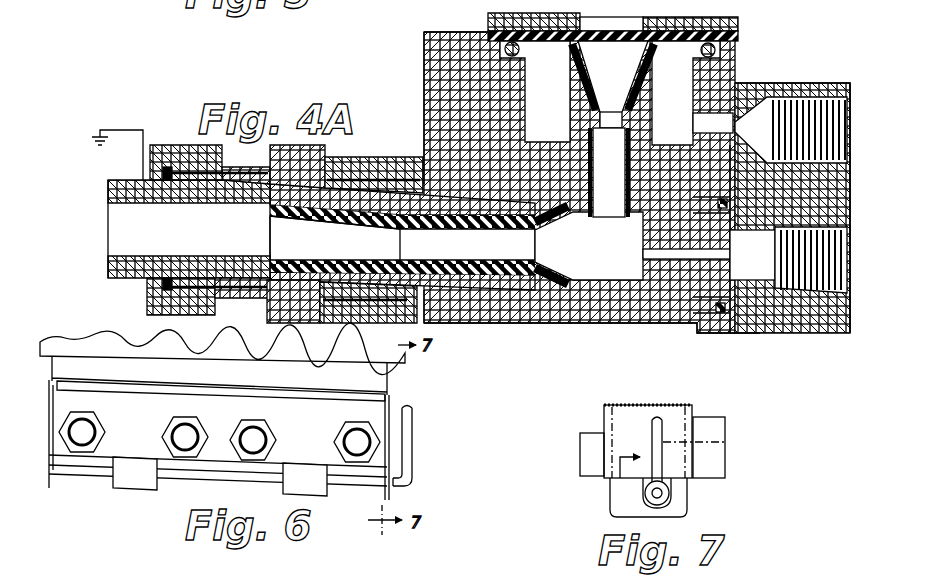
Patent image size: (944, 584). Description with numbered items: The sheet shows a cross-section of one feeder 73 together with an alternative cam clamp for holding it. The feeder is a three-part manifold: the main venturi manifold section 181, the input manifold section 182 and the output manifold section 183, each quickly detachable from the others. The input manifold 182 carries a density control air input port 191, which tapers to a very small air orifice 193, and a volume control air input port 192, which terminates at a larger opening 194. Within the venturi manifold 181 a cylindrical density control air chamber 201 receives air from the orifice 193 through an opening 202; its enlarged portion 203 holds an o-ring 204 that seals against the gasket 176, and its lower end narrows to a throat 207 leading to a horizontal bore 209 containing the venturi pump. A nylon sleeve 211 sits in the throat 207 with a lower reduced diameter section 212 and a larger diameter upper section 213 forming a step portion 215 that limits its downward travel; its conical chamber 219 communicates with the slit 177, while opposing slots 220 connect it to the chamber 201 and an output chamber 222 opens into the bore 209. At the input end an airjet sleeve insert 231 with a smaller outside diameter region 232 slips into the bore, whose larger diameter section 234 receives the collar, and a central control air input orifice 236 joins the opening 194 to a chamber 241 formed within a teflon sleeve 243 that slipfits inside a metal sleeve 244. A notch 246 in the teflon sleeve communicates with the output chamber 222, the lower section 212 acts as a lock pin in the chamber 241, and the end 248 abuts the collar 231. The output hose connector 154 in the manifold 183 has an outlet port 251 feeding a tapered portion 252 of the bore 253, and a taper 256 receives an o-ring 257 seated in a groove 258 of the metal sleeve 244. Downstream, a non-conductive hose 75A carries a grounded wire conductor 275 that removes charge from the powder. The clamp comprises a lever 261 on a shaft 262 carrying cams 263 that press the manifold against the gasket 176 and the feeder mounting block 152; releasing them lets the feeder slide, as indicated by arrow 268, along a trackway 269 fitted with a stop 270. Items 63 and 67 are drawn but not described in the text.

In FIG. 4A, the o-ring 204 is at (539, 14).
In FIG. 4A, the slit 177 is at (618, 40).
In FIG. 4A, the enlarged portion 203 is at (492, 31).
In FIG. 4A, the feeder mounting block 152 is at (740, 22).
In FIG. 6, the feeder mounting block 152 is at (219, 375).
In FIG. 4A, the gasket 176 is at (740, 42).
In FIG. 4A, the air orifice 193 is at (796, 98).
In FIG. 4A, the density control air input port 191 is at (852, 100).
In FIG. 4A, the larger diameter upper section 213 is at (535, 91).
In FIG. 4A, the opposing slots 220 is at (586, 46).
In FIG. 4A, the conical chamber 219 is at (613, 87).
In FIG. 4A, the nylon sleeve 211 is at (686, 93).
In FIG. 4A, the o-ring 257 is at (402, 189).
In FIG. 4A, the metal sleeve 244 is at (497, 200).
In FIG. 4A, the density control air chamber 201 is at (541, 148).
In FIG. 4A, the lower reduced diameter section 212 is at (582, 186).
In FIG. 4A, the step portion 215 is at (609, 172).
In FIG. 4A, the opening 202 is at (702, 136).
In FIG. 4A, the narrowed throat 207 is at (631, 187).
In FIG. 4A, the output chamber 222 is at (589, 246).
In FIG. 4A, the notch 246 is at (657, 249).
In FIG. 4A, the chamber 241 is at (585, 245).
In FIG. 4A, the control air input orifice 236 is at (722, 255).
In FIG. 4A, the output hose connector 154 is at (222, 166).
In FIG. 6, the output hose connector 154 is at (281, 439).
In FIG. 4A, the output manifold section 183 is at (355, 160).
In FIG. 4A, the grounded wire conductor 275 is at (135, 206).
In FIG. 4A, the non-conductive hose 75A is at (135, 235).
In FIG. 4A, the tapered portion 252 is at (335, 238).
In FIG. 4A, the taper 256 is at (330, 222).
In FIG. 4A, the bore 253 is at (402, 238).
In FIG. 6, the assembly 63 is at (65, 302).
In FIG. 6, the plate 67 is at (90, 338).
In FIG. 4A, the outlet port 251 is at (232, 301).
In FIG. 4A, the groove 258 is at (430, 318).
In FIG. 4A, the teflon sleeve 243 is at (510, 318).
In FIG. 4A, the feeder 73 is at (525, 340).
In FIG. 6, the feeder 73 is at (90, 396).
In FIG. 7, the feeder 73 is at (675, 422).
In FIG. 4A, the horizontal bore 209 is at (580, 322).
In FIG. 4A, the main venturi manifold section 181 is at (617, 322).
In FIG. 4A, the end 248 is at (613, 322).
In FIG. 4A, the smaller outside diameter region 232 is at (633, 325).
In FIG. 4A, the airjet sleeve insert 231 is at (683, 324).
In FIG. 4A, the larger diameter section 234 is at (706, 325).
In FIG. 4A, the larger opening 194 is at (757, 296).
In FIG. 4A, the input manifold section 182 is at (771, 333).
In FIG. 4A, the volume control air input port 192 is at (848, 275).
In FIG. 6, the stop 270 is at (328, 394).
In FIG. 7, the stop 270 is at (604, 405).
In FIG. 6, the lever 261 is at (414, 433).
In FIG. 7, the lever 261 is at (727, 441).
In FIG. 6, the shaft 262 is at (254, 483).
In FIG. 7, the shaft 262 is at (669, 498).
In FIG. 6, the cams 263 is at (318, 496).
In FIG. 7, the trackway 269 is at (632, 423).
In FIG. 7, the arrow 268 is at (612, 482).